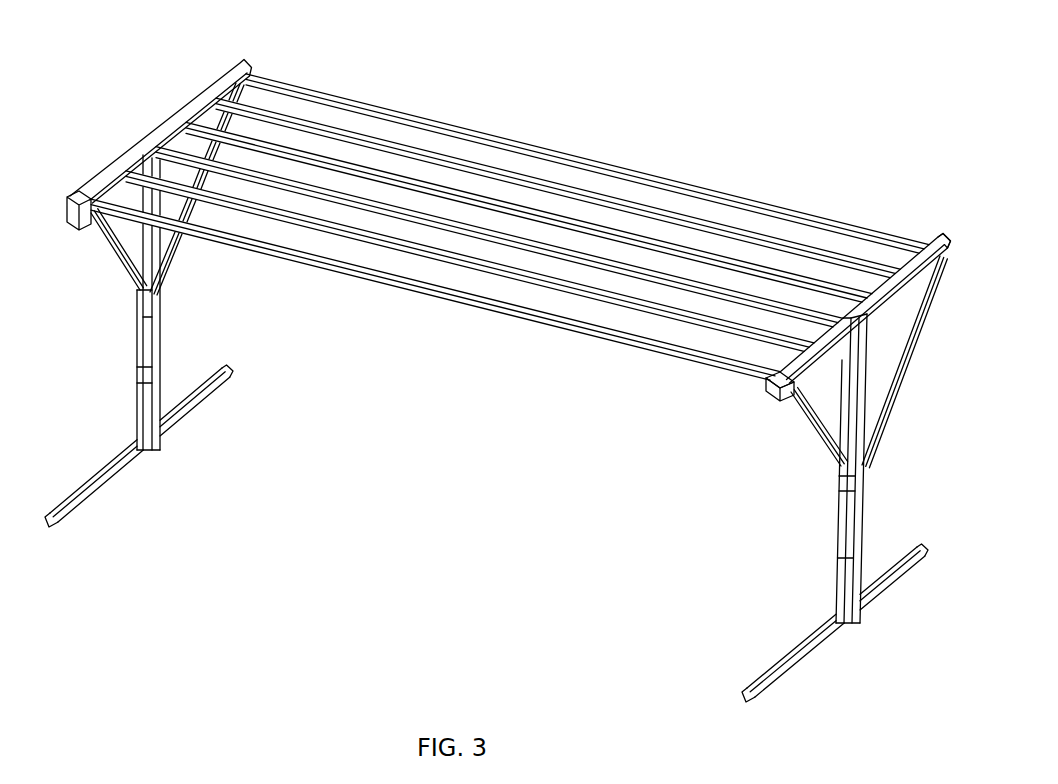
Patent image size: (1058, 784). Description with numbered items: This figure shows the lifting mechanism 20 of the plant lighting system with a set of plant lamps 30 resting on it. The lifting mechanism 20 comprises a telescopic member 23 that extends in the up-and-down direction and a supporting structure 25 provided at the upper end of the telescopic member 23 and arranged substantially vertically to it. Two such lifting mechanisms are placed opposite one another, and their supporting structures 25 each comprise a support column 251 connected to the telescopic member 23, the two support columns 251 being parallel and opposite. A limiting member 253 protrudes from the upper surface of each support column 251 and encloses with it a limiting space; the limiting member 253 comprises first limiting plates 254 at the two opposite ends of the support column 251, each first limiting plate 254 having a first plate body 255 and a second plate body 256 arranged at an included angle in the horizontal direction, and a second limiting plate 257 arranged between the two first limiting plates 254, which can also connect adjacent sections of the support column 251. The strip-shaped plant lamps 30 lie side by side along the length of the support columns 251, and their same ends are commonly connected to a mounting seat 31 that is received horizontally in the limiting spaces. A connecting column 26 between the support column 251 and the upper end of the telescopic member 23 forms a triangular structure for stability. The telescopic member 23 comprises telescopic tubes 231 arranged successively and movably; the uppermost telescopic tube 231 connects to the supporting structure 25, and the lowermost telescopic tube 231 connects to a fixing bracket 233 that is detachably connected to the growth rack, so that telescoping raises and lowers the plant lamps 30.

The lifting mechanism 20 is at (485, 428).
The telescopic member 23 is at (454, 389).
The telescopic tube 231 is at (142, 312).
The fixing bracket 233 is at (184, 414).
The supporting structure 25 is at (504, 275).
The support column 251 is at (110, 187).
The limiting member 253 is at (323, 336).
The first limiting plate 254 is at (682, 383).
The first plate body 255 is at (74, 232).
The second plate body 256 is at (947, 256).
The second limiting plate 257 is at (866, 328).
The connecting column 26 is at (115, 262).
The plant lamp 30 is at (256, 72).
The mounting seat 31 is at (206, 95).